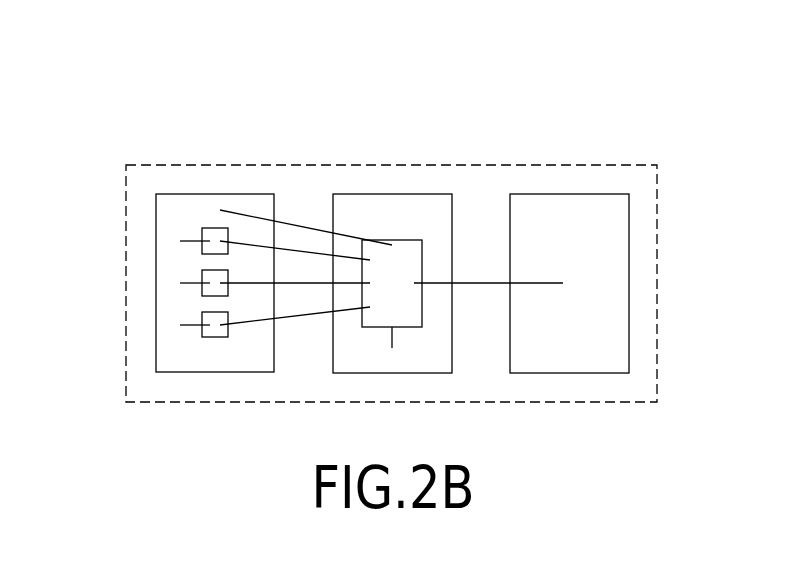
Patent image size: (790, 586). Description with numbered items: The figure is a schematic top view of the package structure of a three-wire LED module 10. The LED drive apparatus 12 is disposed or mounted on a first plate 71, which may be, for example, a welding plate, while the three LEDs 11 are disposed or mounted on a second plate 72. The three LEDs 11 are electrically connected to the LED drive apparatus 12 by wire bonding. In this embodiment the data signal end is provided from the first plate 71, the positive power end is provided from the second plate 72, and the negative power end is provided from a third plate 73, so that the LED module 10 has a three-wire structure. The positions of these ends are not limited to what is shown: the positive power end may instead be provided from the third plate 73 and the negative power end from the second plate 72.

The LED module 10 is at (378, 62).
The LEDs 11 is at (188, 268).
The LED drive apparatus 12 is at (410, 245).
The first plate 71 is at (392, 200).
The second plate 72 is at (215, 200).
The third plate 73 is at (569, 200).